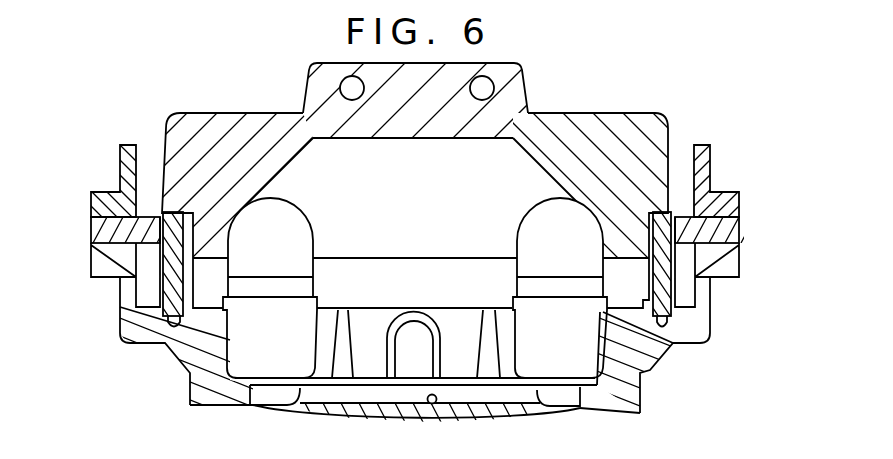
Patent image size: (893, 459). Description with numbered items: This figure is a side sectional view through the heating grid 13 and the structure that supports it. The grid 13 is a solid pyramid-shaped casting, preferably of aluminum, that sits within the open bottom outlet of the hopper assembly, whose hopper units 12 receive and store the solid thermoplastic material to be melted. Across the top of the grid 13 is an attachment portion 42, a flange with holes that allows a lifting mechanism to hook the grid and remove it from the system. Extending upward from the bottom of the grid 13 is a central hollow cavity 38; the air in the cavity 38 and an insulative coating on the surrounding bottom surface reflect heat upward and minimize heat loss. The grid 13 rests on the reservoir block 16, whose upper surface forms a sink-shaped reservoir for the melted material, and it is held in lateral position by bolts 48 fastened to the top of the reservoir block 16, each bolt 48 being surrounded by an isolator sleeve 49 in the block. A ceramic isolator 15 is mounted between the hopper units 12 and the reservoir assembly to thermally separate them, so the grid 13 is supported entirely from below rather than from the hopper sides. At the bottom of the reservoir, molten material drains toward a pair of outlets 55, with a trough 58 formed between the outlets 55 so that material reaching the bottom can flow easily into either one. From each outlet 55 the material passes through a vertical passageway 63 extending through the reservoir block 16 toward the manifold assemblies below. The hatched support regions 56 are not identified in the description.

The hopper unit 12 is at (103, 206).
The heating grid 13 is at (574, 128).
The ceramic isolator 15 is at (97, 233).
The reservoir block 16 is at (640, 404).
The central hollow cavity 38 is at (287, 173).
The attachment portion 42 is at (320, 66).
The bolt 48 is at (176, 290).
The isolator sleeve 49 is at (180, 292).
The outlet 55 is at (282, 404).
The support rib 56 is at (192, 391).
The trough 58 is at (437, 404).
The passageway 63 is at (263, 405).